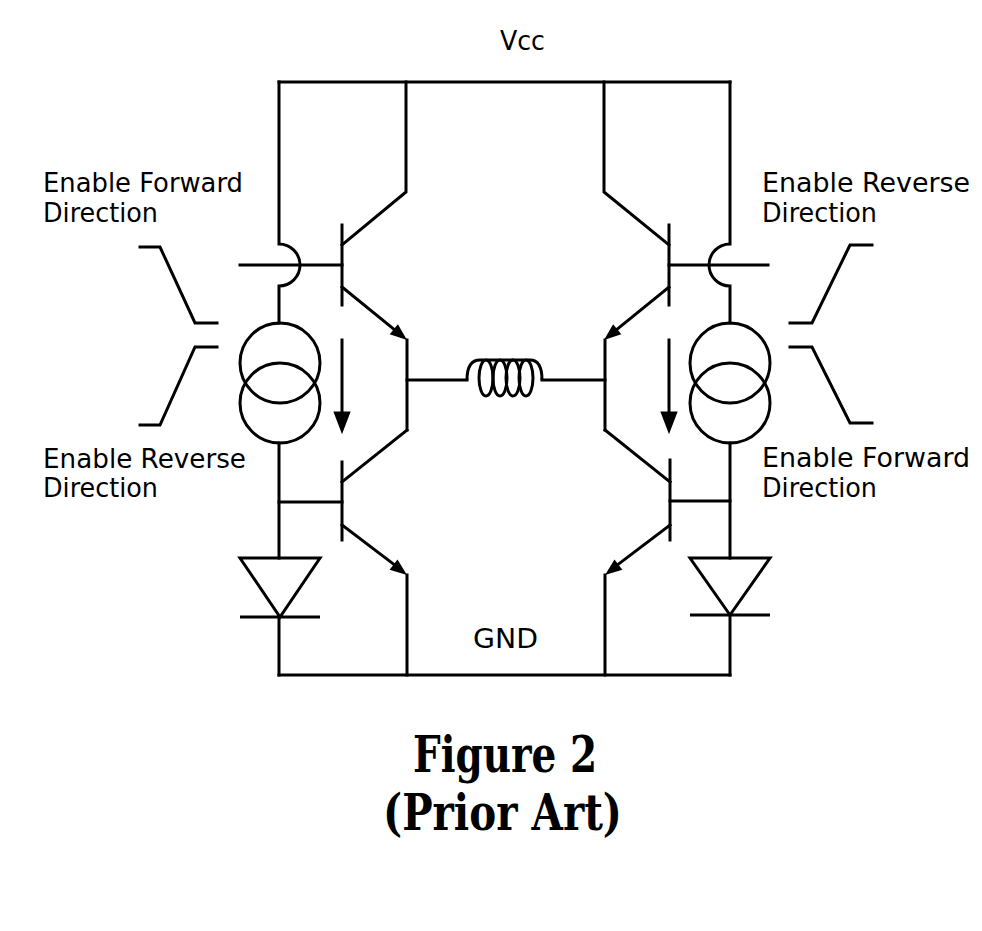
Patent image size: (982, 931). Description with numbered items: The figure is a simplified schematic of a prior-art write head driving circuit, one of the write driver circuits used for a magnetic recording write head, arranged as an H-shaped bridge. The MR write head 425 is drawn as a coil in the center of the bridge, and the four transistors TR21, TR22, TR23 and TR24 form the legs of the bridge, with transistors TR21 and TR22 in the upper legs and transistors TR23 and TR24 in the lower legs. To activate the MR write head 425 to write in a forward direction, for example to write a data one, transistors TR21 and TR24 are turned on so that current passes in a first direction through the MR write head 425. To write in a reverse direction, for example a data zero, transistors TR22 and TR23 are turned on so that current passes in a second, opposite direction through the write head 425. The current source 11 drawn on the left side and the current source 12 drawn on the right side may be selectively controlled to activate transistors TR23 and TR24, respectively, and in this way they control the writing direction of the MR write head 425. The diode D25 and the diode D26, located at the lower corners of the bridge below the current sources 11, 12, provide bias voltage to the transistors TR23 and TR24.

The current source 11 is at (258, 383).
The current source 12 is at (752, 383).
The MR write head 425 is at (499, 397).
The transistor TR21 is at (389, 211).
The transistor TR22 is at (619, 211).
The transistor TR23 is at (390, 502).
The transistor TR24 is at (621, 502).
The diode D25 is at (242, 587).
The diode D26 is at (767, 586).